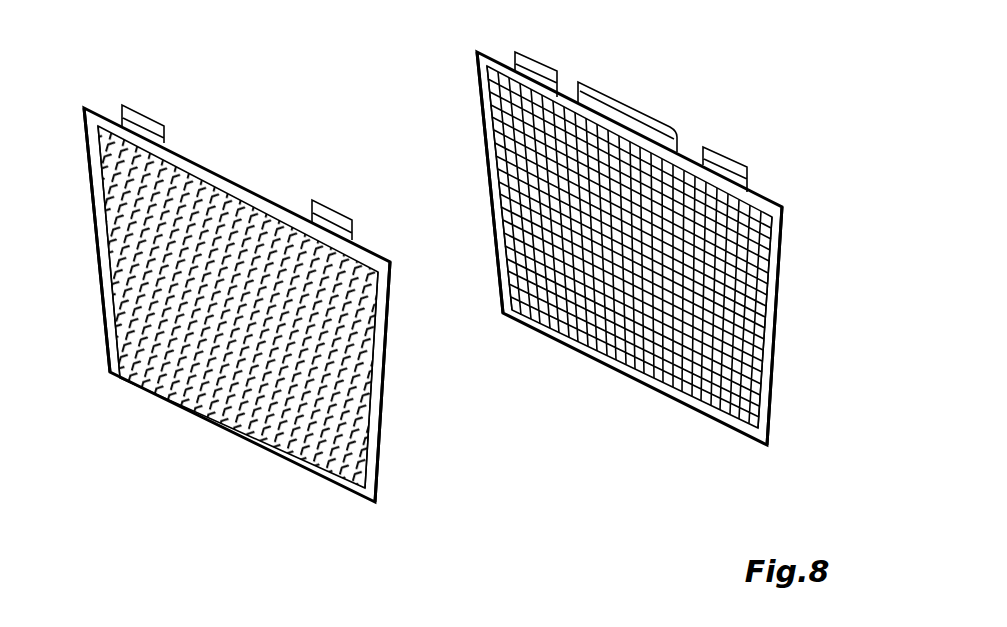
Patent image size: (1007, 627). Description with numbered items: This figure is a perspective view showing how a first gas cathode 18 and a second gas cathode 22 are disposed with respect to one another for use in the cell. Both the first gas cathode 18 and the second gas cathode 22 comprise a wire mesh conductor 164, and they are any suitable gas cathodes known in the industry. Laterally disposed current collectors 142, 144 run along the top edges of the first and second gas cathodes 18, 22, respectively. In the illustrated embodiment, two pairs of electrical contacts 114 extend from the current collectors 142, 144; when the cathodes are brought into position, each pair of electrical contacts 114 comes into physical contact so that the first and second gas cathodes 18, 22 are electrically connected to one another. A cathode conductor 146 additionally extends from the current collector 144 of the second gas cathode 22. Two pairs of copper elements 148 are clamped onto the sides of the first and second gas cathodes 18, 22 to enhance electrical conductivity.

The first gas cathode 18 is at (222, 440).
The second gas cathode 22 is at (636, 402).
The electrical contacts 114 is at (142, 125).
The current collector 142 is at (213, 172).
The current collector 144 is at (632, 137).
The cathode conductor 146 is at (602, 108).
The copper elements 148 is at (108, 285).
The wire mesh conductor 164 is at (735, 289).